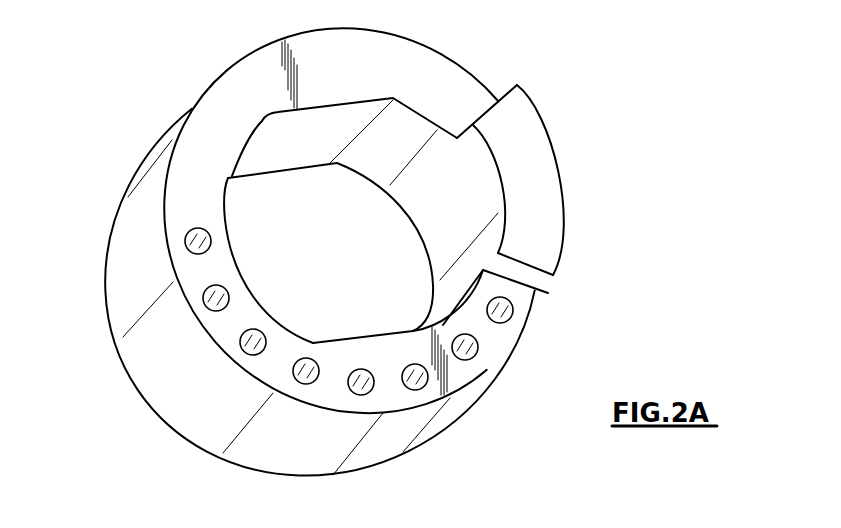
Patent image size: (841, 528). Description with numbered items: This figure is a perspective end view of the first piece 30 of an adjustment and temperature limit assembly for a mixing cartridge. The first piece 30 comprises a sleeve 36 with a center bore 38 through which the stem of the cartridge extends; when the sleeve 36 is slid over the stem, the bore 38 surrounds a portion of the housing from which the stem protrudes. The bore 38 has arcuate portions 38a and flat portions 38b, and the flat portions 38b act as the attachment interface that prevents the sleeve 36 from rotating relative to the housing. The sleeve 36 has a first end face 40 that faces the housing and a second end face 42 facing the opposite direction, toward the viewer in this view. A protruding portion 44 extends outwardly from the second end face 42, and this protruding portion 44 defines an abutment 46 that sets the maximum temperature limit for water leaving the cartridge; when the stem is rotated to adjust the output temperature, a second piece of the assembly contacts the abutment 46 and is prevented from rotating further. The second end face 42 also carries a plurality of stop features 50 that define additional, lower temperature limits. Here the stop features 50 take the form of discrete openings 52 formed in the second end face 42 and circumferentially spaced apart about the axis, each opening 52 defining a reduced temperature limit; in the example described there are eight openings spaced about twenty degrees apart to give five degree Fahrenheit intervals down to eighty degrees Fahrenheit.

The first piece 30 is at (138, 91).
The sleeve 36 is at (167, 395).
The center bore 38 is at (330, 200).
The arcuate portions 38a is at (253, 293).
The flat portions 38b is at (313, 118).
The first end face 40 is at (115, 338).
The second end face 42 is at (433, 67).
The protruding portion 44 is at (545, 150).
The abutment 46 is at (540, 280).
The stop features 50 is at (238, 294).
The discrete openings 52 is at (453, 342).